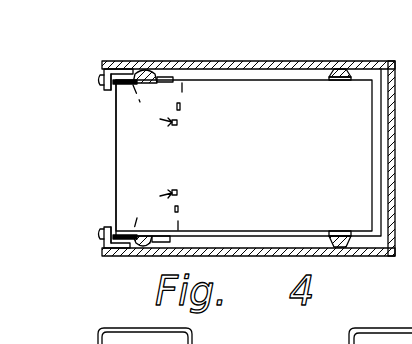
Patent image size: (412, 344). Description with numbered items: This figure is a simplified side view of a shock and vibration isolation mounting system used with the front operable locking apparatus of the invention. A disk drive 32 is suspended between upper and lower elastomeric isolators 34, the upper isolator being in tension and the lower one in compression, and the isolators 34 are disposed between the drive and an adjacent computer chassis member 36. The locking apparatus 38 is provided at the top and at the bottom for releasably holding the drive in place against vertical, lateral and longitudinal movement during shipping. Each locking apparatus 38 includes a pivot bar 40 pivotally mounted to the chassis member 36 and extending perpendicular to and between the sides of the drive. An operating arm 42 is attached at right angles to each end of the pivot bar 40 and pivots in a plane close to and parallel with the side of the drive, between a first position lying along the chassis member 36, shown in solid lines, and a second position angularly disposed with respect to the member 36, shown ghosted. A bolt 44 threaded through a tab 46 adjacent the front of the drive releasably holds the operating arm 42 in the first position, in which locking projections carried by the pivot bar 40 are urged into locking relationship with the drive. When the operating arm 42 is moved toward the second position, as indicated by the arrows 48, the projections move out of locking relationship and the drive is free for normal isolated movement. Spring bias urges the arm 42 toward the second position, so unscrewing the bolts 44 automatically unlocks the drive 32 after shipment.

The disk drive 32 is at (292, 134).
The elastomeric isolator 34 is at (355, 66).
The computer chassis member 36 is at (244, 61).
The front operable locking apparatus 38 is at (88, 94).
The pivot bar 40 is at (181, 72).
The operating arm 42 is at (133, 60).
The bolt 44 is at (100, 79).
The tab 46 is at (105, 92).
The arrows 48 is at (141, 158).